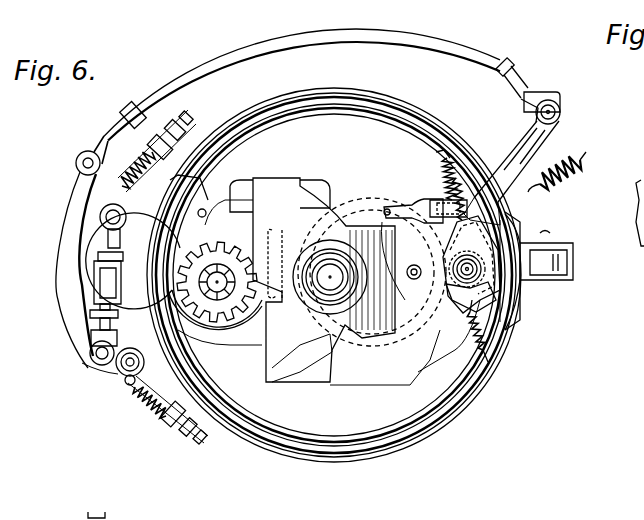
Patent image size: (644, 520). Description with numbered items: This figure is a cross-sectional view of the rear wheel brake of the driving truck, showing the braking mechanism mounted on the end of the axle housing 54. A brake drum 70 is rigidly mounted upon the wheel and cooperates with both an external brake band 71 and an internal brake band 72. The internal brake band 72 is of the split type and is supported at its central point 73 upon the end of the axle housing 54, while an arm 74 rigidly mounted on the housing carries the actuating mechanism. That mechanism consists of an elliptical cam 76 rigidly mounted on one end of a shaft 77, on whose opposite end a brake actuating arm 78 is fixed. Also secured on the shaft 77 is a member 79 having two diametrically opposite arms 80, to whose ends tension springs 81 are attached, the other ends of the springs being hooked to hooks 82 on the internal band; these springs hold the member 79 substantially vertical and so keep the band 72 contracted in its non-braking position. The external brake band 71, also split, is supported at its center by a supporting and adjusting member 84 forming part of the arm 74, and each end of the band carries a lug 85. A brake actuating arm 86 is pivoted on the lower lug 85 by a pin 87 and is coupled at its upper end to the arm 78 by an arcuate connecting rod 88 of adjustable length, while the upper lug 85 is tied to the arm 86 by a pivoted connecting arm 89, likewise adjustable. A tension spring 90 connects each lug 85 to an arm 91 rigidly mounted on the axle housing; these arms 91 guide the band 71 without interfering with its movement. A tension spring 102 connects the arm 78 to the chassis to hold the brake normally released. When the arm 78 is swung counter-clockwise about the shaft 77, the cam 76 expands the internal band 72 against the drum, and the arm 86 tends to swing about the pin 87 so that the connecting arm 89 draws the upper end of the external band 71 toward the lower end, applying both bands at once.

The front axle housing 54 is at (232, 198).
The brake drum 70 is at (399, 112).
The external brake band 71 is at (362, 90).
The internal brake band 72 is at (438, 139).
The central point 73 is at (170, 288).
The arm 74 is at (366, 238).
The elliptical cam 76 is at (453, 282).
The shaft 77 is at (462, 300).
The brake actuating arm 78 is at (534, 146).
The member 79 is at (473, 243).
The arms 80 is at (452, 240).
The tension springs 81 is at (442, 182).
The hooks 82 is at (442, 156).
The supporting and adjusting member 84 is at (562, 264).
The lugs 85 is at (108, 202).
The brake actuating arm 86 is at (72, 338).
The pin 87 is at (123, 374).
The arcuate connecting rod 88 is at (305, 36).
The connecting arm 89 is at (104, 287).
The tension spring 90 is at (128, 157).
The arm 91 is at (188, 140).
The tension springs 102 is at (568, 188).